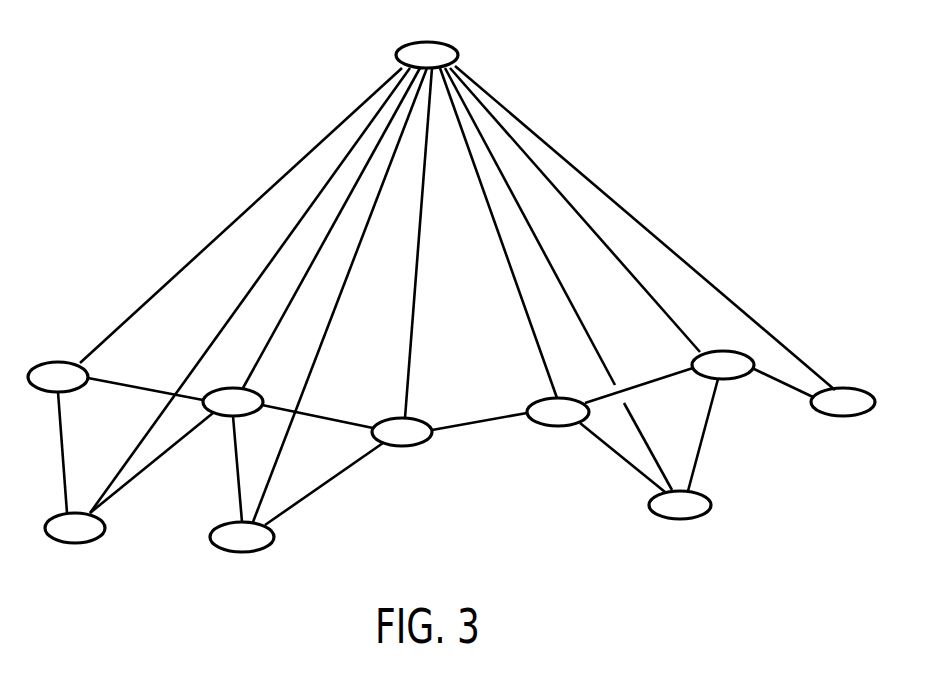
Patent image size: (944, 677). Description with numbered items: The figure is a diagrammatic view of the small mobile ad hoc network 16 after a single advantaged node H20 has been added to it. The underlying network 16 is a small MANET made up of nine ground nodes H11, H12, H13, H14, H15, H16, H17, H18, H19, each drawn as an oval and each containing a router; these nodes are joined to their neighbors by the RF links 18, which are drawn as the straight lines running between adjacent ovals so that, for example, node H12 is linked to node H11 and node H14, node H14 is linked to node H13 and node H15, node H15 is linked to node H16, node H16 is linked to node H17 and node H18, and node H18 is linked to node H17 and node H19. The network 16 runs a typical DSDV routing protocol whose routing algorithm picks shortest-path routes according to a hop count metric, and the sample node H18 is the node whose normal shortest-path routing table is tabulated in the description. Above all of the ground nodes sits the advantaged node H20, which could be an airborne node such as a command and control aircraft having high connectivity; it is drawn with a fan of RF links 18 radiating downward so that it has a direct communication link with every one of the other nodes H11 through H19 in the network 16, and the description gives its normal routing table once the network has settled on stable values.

The network 16 is at (482, 355).
The RF links 18 is at (250, 292).
The node H11 is at (75, 545).
The node H12 is at (42, 362).
The node H13 is at (243, 553).
The node H14 is at (205, 416).
The node H15 is at (402, 447).
The node H16 is at (558, 427).
The node H17 is at (683, 521).
The node H18 is at (727, 380).
The node H19 is at (843, 417).
The advantaged node H20 is at (448, 43).